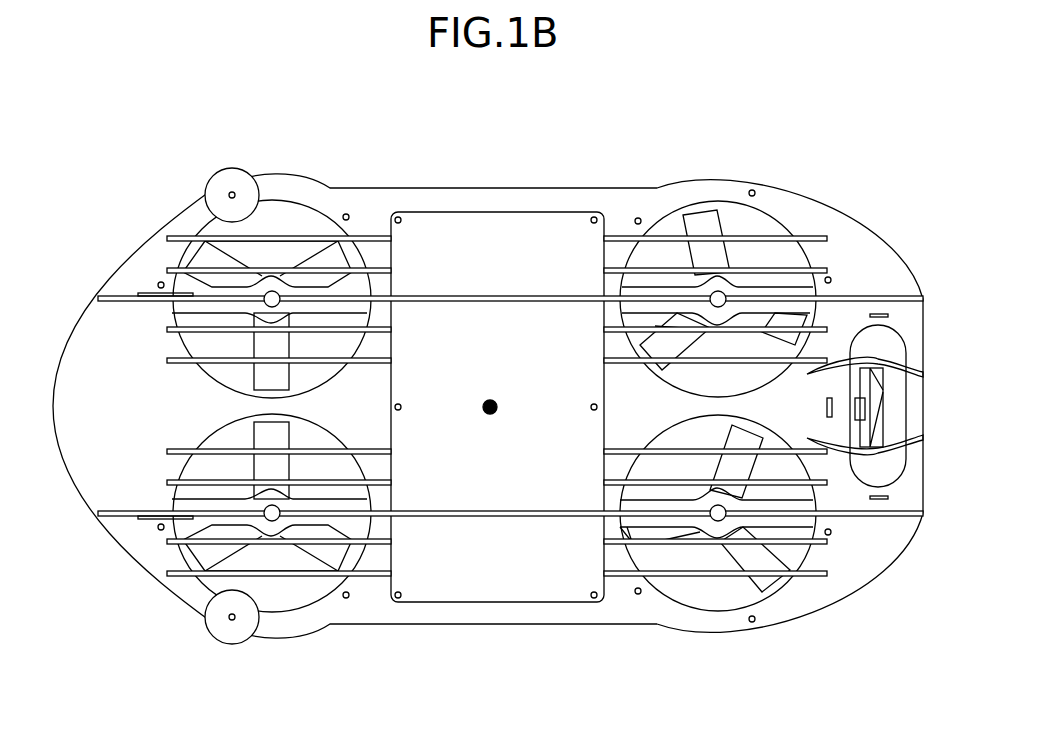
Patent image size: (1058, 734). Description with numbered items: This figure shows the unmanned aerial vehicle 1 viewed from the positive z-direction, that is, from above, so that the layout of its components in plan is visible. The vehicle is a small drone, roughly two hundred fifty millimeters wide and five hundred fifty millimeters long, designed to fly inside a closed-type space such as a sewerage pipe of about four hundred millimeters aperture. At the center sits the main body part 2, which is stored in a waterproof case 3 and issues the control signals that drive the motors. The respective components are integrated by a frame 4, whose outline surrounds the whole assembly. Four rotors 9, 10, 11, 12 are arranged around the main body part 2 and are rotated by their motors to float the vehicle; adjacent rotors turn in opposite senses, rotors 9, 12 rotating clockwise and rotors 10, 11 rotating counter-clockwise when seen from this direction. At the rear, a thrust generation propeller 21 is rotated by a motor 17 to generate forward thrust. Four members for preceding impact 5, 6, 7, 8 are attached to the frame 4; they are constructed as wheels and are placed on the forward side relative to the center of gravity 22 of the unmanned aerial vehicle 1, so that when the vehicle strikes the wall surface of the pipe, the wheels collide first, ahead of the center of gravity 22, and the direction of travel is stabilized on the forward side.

The unmanned aerial vehicle 1 is at (786, 148).
The main body part 2 is at (497, 453).
The waterproof case 3 is at (497, 594).
The frame 4 is at (833, 593).
The member for preceding impact 5 is at (151, 523).
The member for preceding impact 6 is at (145, 289).
The member for preceding impact 7 is at (233, 630).
The member for preceding impact 8 is at (229, 178).
The rotor 9 is at (217, 538).
The rotor 10 is at (208, 257).
The rotor 11 is at (747, 557).
The rotor 12 is at (715, 248).
The motor 17 is at (873, 430).
The thrust generation propeller 21 is at (877, 397).
The center of gravity 22 is at (490, 400).